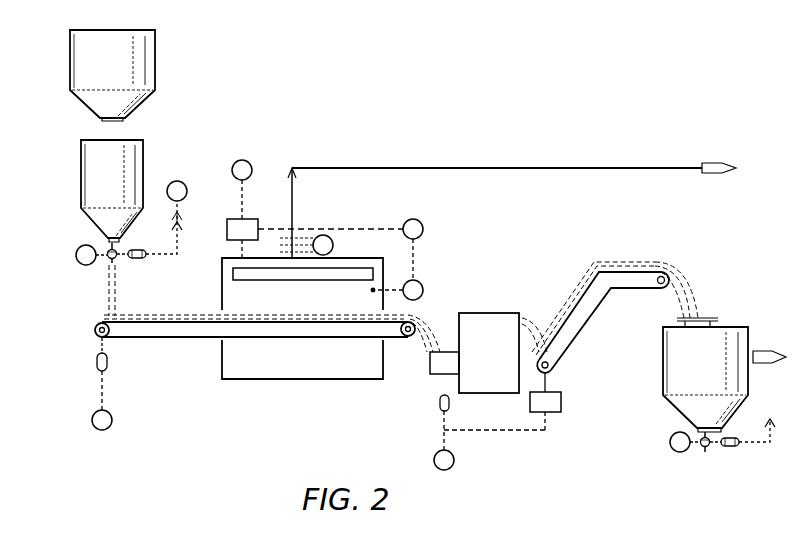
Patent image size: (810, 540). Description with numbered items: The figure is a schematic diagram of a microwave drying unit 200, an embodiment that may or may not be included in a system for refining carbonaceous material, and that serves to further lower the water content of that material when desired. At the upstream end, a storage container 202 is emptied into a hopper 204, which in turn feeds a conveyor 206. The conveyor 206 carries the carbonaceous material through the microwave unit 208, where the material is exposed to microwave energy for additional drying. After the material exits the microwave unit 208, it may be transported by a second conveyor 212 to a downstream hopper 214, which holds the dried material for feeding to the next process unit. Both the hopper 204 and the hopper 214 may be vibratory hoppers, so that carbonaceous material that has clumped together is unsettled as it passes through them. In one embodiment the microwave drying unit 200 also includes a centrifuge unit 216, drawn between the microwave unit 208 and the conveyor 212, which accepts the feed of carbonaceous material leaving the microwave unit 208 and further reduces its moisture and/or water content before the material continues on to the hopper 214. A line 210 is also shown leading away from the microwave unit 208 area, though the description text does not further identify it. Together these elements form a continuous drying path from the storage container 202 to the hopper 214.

The microwave drying unit 200 is at (467, 77).
The storage container 202 is at (70, 62).
The hopper 204 is at (81, 173).
The conveyor 206 is at (183, 340).
The microwave unit 208 is at (300, 380).
The exhaust line 210 is at (593, 168).
The conveyor 212 is at (583, 322).
The hopper 214 is at (730, 327).
The centrifuge unit 216 is at (507, 362).